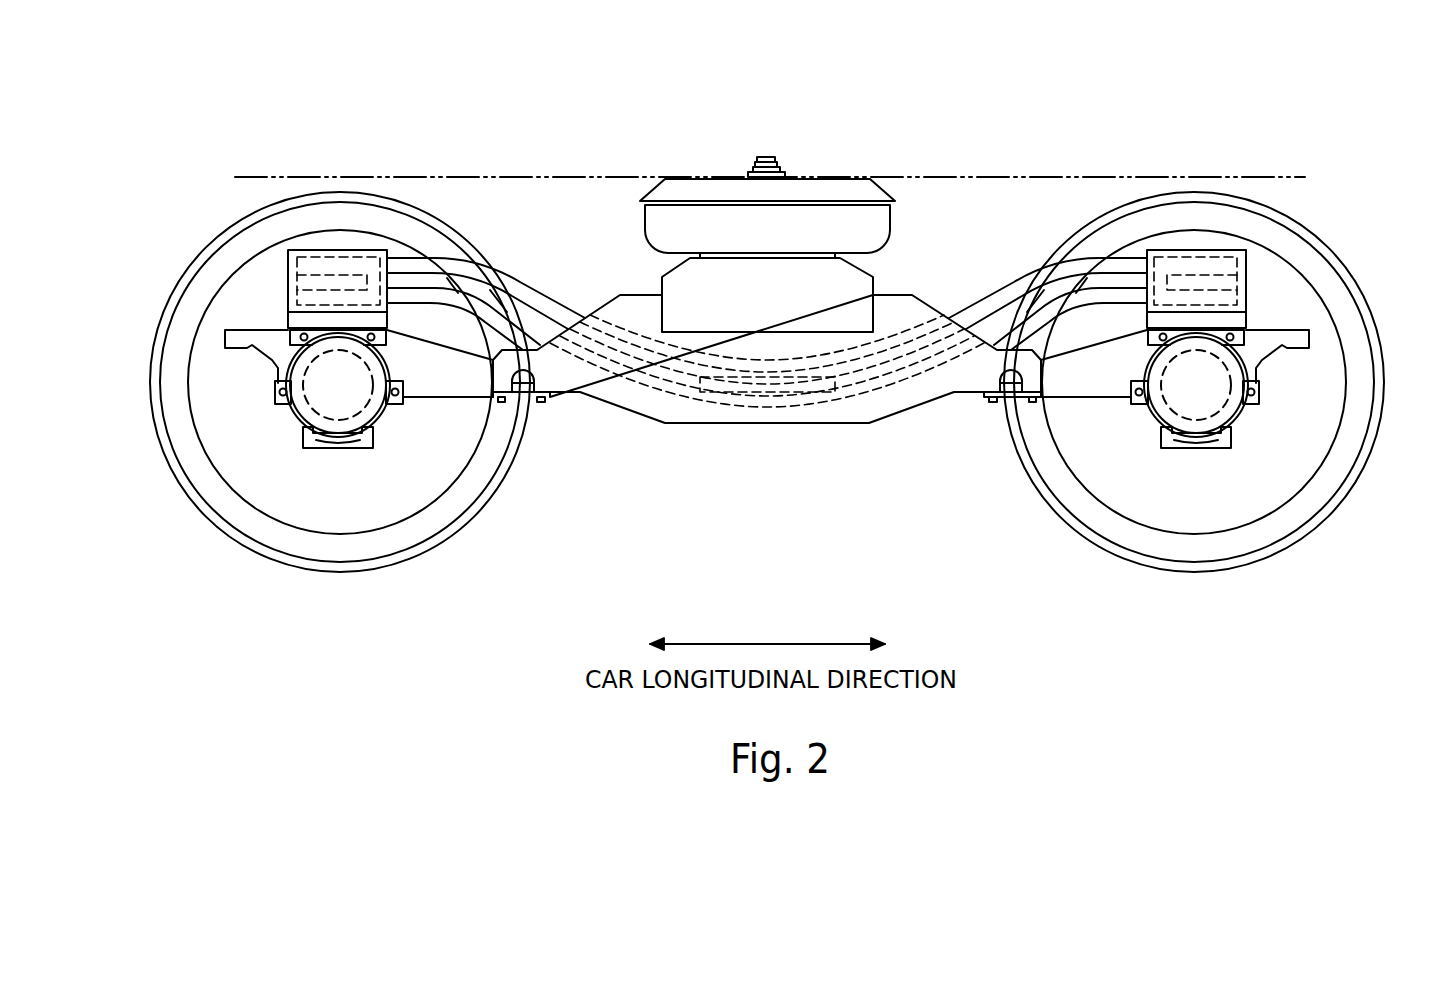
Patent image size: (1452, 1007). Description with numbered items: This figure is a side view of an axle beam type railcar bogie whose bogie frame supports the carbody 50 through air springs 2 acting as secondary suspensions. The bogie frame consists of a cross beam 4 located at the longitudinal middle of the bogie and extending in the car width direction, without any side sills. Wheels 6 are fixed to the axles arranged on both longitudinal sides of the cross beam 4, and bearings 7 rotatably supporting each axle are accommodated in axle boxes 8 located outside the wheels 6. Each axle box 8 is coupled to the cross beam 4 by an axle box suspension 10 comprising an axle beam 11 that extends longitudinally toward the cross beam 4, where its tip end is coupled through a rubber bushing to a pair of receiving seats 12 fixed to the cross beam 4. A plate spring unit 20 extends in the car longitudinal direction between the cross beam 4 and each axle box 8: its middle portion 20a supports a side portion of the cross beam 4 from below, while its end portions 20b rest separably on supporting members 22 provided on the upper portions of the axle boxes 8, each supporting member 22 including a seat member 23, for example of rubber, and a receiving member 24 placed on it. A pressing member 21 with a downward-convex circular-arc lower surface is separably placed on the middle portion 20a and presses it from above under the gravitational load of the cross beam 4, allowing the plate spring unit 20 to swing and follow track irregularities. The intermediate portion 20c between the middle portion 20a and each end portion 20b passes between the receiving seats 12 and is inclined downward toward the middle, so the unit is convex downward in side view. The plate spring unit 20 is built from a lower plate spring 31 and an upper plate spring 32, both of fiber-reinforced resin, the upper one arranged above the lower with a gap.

The air spring 2 is at (829, 190).
The cross beam 4 is at (718, 280).
The wheel 6 is at (243, 218).
The bearing 7 is at (290, 410).
The axle box 8 is at (270, 373).
The axle box suspension 10 is at (767, 456).
The axle beam 11 is at (457, 387).
The receiving seat 12 is at (905, 425).
The plate spring unit 20 is at (767, 287).
The longitudinal direction middle portion 20a is at (787, 407).
The longitudinal direction end portion 20b is at (333, 258).
The intermediate portion 20c is at (512, 290).
The pressing member 21 is at (757, 352).
The supporting member 22 is at (765, 256).
The seat member 23 is at (287, 320).
The receiving member 24 is at (287, 278).
The lower plate spring 31 is at (1013, 330).
The upper plate spring 32 is at (987, 307).
The carbody 50 is at (645, 175).